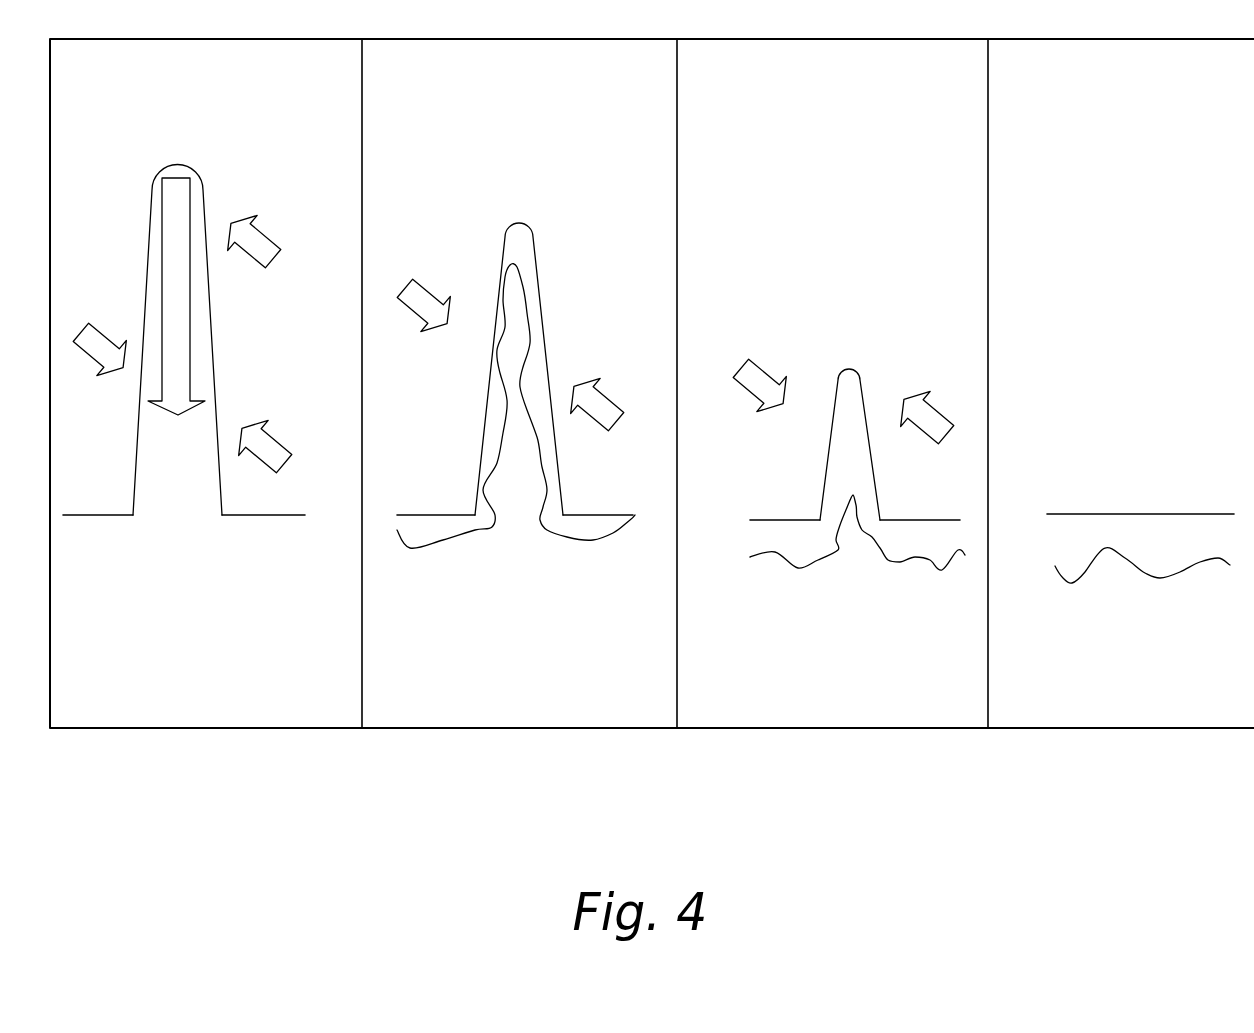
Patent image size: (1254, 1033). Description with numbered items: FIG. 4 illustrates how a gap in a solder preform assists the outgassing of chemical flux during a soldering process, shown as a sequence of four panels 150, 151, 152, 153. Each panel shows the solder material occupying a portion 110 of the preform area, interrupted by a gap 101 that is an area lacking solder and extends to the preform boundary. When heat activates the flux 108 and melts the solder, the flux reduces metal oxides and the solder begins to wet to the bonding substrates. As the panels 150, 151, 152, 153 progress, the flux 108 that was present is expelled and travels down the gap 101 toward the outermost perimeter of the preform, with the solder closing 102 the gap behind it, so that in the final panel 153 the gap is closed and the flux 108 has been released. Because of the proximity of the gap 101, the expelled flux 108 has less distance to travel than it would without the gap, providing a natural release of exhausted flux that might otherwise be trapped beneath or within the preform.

The gap 101 is at (175, 509).
The solder closing 102 is at (191, 413).
The flux 108 is at (277, 213).
The portion of the area 110 is at (241, 376).
The panel 150 is at (168, 75).
The panel 151 is at (513, 75).
The panel 152 is at (830, 81).
The panel 153 is at (1132, 83).